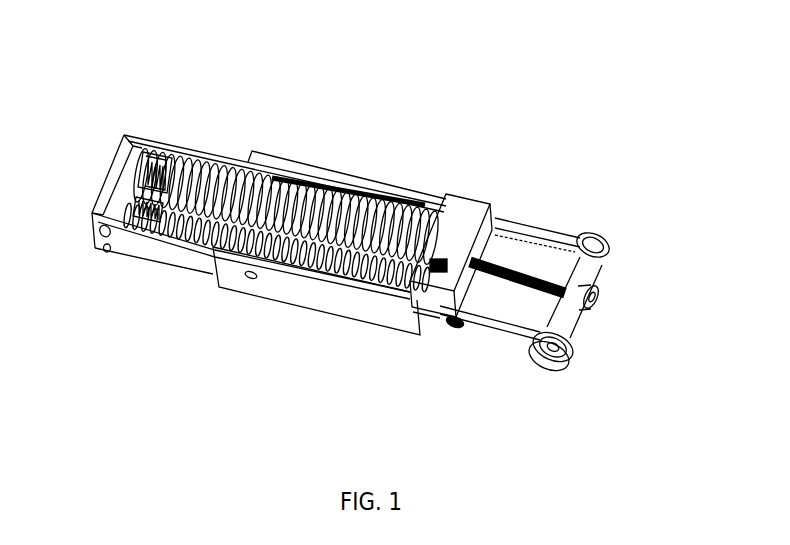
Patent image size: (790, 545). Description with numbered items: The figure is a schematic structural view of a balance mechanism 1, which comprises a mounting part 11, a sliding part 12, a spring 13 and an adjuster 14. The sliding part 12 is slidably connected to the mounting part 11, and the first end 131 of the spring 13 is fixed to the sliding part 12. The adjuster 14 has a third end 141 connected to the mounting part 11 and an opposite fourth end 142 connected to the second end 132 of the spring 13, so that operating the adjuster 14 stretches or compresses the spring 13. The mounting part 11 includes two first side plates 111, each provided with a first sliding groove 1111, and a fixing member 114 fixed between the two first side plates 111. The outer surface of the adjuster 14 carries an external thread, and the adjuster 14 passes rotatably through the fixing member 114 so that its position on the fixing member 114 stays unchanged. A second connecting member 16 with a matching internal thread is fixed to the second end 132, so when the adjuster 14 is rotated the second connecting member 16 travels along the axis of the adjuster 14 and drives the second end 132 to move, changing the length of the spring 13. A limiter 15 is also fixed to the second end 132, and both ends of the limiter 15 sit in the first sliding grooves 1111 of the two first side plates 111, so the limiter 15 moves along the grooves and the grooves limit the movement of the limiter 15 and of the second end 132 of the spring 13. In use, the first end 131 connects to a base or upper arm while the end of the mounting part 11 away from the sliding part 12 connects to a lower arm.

The balance mechanism 1 is at (62, 38).
The mounting part 11 is at (413, 203).
The first side plates 111 is at (584, 227).
The first sliding groove 1111 is at (560, 360).
The fixing member 114 is at (600, 280).
The sliding part 12 is at (210, 150).
The spring 13 is at (295, 178).
The first end 131 is at (170, 147).
The second end 132 is at (427, 317).
The adjuster 14 is at (547, 280).
The third end 141 is at (603, 308).
The fourth end 142 is at (445, 197).
The limiter 15 is at (457, 332).
The second connecting member 16 is at (493, 340).